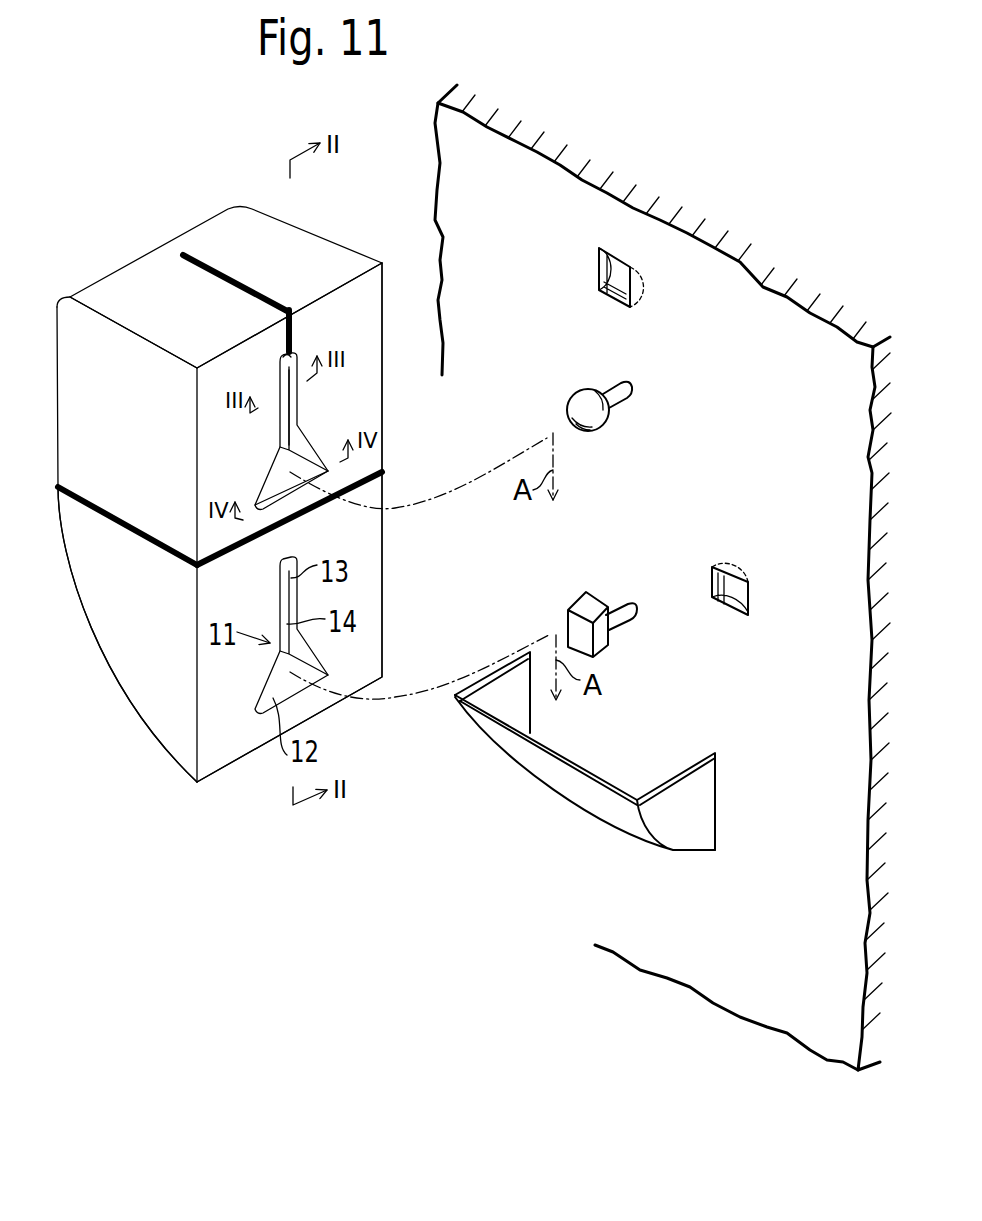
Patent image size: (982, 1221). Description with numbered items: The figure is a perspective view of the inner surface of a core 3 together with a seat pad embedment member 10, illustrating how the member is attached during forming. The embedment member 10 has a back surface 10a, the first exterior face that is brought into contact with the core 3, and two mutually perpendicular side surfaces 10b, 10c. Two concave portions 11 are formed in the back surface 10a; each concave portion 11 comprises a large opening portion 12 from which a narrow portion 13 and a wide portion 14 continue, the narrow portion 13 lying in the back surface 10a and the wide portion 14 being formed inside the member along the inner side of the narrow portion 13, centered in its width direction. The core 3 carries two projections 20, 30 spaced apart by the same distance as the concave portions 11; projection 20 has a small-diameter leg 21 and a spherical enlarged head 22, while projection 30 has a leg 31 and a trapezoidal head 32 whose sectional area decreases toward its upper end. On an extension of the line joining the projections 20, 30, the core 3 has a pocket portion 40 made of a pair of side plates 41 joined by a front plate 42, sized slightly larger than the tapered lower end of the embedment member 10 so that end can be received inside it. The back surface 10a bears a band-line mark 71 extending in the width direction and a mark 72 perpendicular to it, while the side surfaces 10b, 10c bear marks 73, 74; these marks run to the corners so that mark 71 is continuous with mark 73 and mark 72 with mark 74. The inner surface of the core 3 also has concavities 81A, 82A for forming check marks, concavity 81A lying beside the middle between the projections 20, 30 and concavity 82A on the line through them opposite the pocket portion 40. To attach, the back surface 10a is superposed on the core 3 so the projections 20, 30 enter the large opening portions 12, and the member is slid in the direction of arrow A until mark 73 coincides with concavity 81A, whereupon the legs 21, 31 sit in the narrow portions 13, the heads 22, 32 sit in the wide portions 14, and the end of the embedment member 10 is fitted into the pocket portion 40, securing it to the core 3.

The core 3 is at (643, 236).
The seat pad embedment member 10 is at (202, 240).
The back surface 10a is at (380, 578).
The side surface 10b is at (140, 683).
The side surface 10c is at (123, 283).
The concave portion 11 is at (262, 442).
The large opening portion 12 is at (302, 449).
The narrow portion 13 is at (295, 362).
The wide portion 14 is at (282, 400).
The projection 20 is at (628, 390).
The leg 21 is at (627, 392).
The head 22 is at (597, 418).
The projection 30 is at (628, 618).
The leg 31 is at (632, 620).
The head 32 is at (603, 648).
The pocket portion 40 is at (612, 753).
The side plate 41 is at (518, 704).
The front plate 42 is at (532, 762).
The mark 71 is at (248, 547).
The mark 72 is at (282, 343).
The mark 73 is at (122, 532).
The mark 74 is at (237, 277).
The concavity 81A is at (750, 593).
The concavity 82A is at (602, 296).